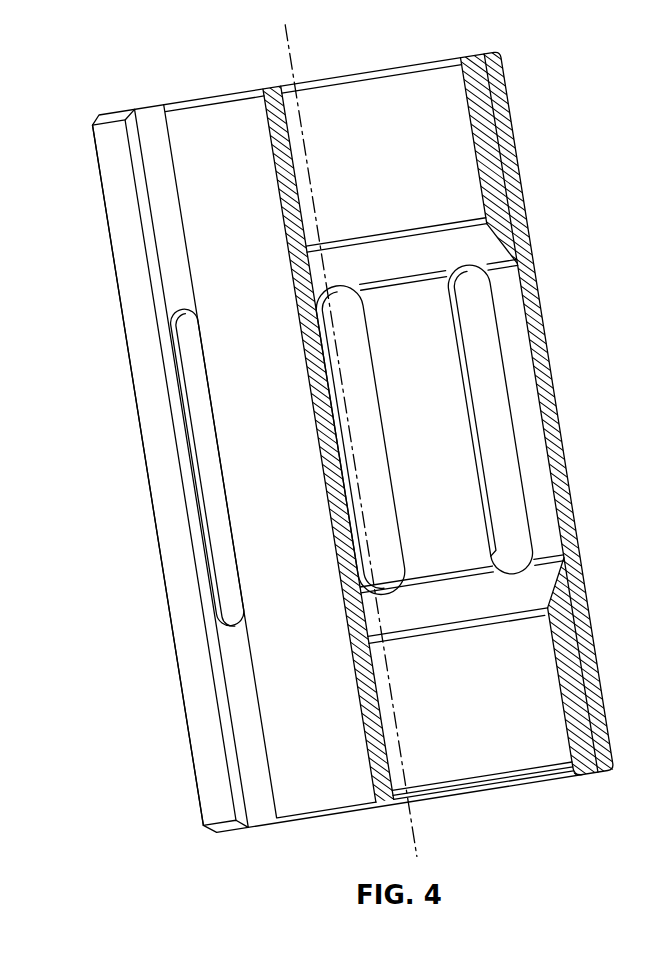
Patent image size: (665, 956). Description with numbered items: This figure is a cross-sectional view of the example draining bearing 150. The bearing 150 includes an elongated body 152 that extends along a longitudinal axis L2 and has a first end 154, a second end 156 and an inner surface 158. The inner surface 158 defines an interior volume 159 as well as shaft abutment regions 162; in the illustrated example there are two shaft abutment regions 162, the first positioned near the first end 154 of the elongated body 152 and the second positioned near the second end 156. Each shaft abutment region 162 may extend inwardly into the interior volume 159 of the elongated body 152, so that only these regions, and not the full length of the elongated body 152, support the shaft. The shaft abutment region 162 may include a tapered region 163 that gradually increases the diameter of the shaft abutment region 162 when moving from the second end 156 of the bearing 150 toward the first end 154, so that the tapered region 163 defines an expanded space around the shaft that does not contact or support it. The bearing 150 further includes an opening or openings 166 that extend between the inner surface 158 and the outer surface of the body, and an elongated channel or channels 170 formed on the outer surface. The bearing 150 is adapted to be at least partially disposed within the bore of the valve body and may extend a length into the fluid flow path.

The bearing 150 is at (551, 780).
The elongated body 152 is at (148, 486).
The first end 154 is at (206, 858).
The second end 156 is at (98, 234).
The inner surface 158 is at (460, 183).
The interior volume 159 is at (435, 86).
The shaft abutment region 162 is at (414, 181).
The tapered region 163 is at (515, 240).
The opening 166 is at (493, 410).
The elongated channel 170 is at (151, 122).
The longitudinal axis L2 is at (297, 68).